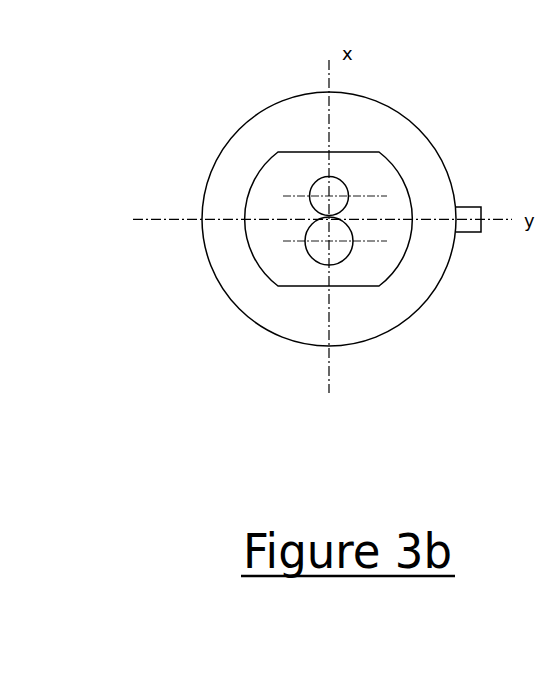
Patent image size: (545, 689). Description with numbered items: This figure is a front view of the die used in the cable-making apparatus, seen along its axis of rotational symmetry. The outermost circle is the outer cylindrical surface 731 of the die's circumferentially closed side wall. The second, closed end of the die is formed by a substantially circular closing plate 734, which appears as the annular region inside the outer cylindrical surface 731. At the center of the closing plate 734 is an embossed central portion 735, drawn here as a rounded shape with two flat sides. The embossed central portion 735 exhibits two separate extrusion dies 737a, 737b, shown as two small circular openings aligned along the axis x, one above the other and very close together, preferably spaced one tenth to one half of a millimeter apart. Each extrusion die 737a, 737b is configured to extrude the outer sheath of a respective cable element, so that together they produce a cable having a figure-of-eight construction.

The outer cylindrical surface 731 is at (230, 135).
The closing plate 734 is at (379, 119).
The embossed central portion 735 is at (394, 163).
The extrusion die 737a is at (318, 176).
The extrusion die 737b is at (313, 257).